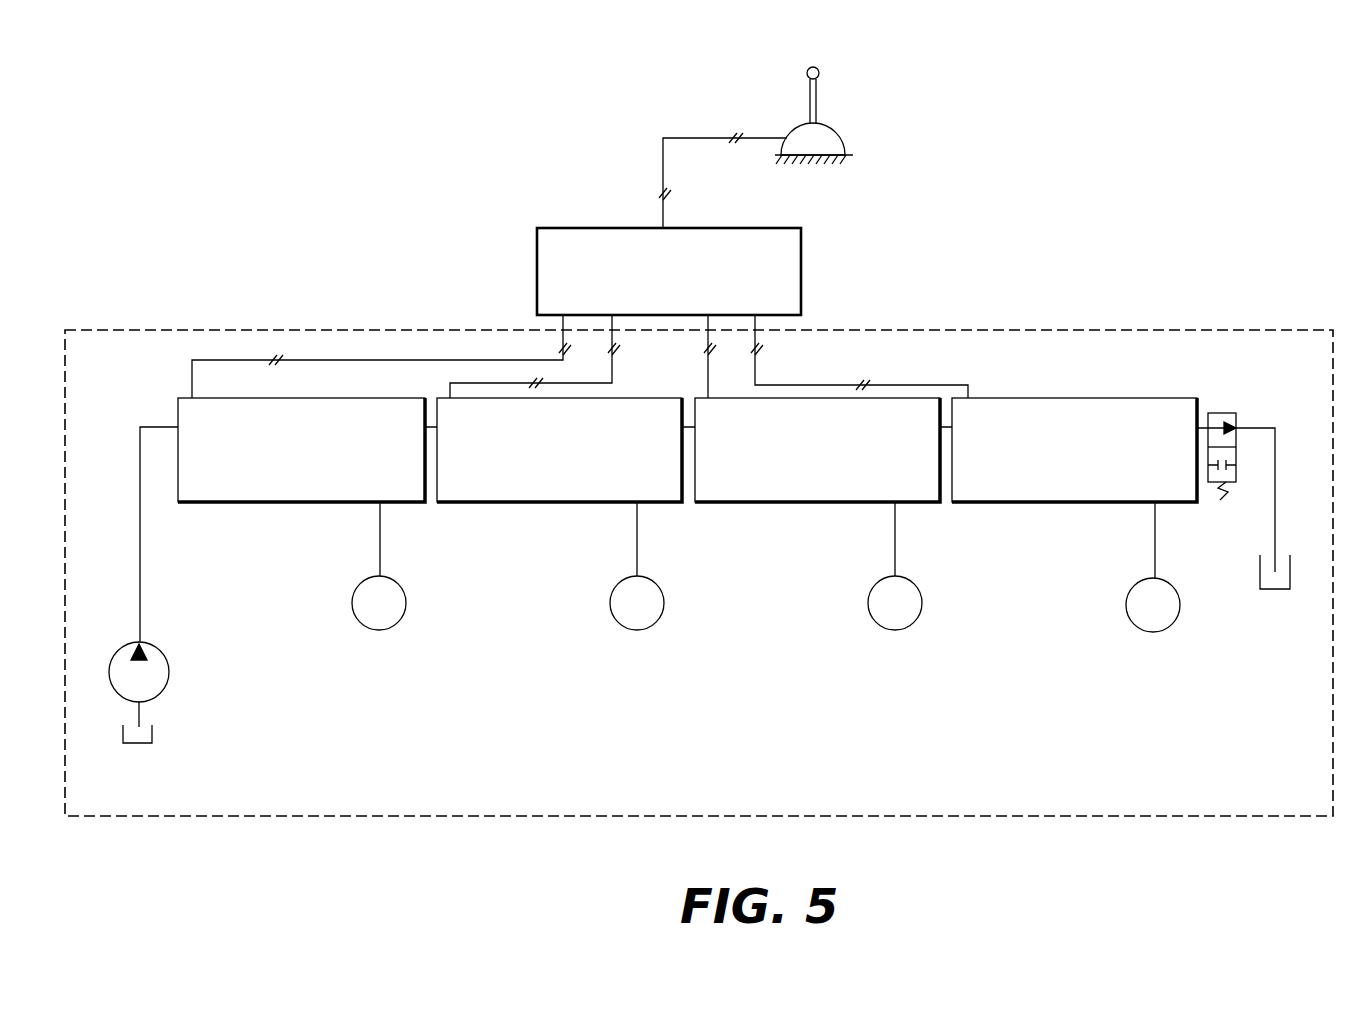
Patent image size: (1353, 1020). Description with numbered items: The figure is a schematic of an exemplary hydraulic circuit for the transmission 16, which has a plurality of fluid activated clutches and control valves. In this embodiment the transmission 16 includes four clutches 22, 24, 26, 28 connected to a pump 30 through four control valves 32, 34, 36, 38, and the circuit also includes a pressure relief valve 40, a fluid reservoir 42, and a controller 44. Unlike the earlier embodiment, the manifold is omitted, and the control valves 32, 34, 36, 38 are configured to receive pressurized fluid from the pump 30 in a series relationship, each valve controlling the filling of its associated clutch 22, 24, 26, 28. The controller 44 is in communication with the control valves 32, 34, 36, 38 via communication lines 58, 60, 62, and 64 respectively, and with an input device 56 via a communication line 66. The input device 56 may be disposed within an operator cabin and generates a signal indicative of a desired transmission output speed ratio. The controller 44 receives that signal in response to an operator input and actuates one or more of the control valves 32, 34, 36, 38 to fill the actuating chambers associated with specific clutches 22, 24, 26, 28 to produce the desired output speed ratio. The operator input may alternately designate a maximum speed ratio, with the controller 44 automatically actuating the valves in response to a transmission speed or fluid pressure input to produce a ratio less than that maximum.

The transmission 16 is at (1047, 818).
The clutch 22 is at (406, 603).
The clutch 24 is at (664, 603).
The clutch 26 is at (922, 603).
The clutch 28 is at (1180, 605).
The pump 30 is at (169, 668).
The control valve 32 is at (301, 450).
The control valve 34 is at (559, 450).
The control valve 36 is at (817, 450).
The control valve 38 is at (1074, 450).
The pressure relief valve 40 is at (1223, 412).
The fluid reservoir 42 is at (152, 730).
The controller 44 is at (801, 261).
The input device 56 is at (819, 75).
The communication line 58 is at (492, 358).
The communication line 60 is at (614, 377).
The communication line 62 is at (709, 391).
The communication line 64 is at (921, 384).
The communication line 66 is at (686, 135).